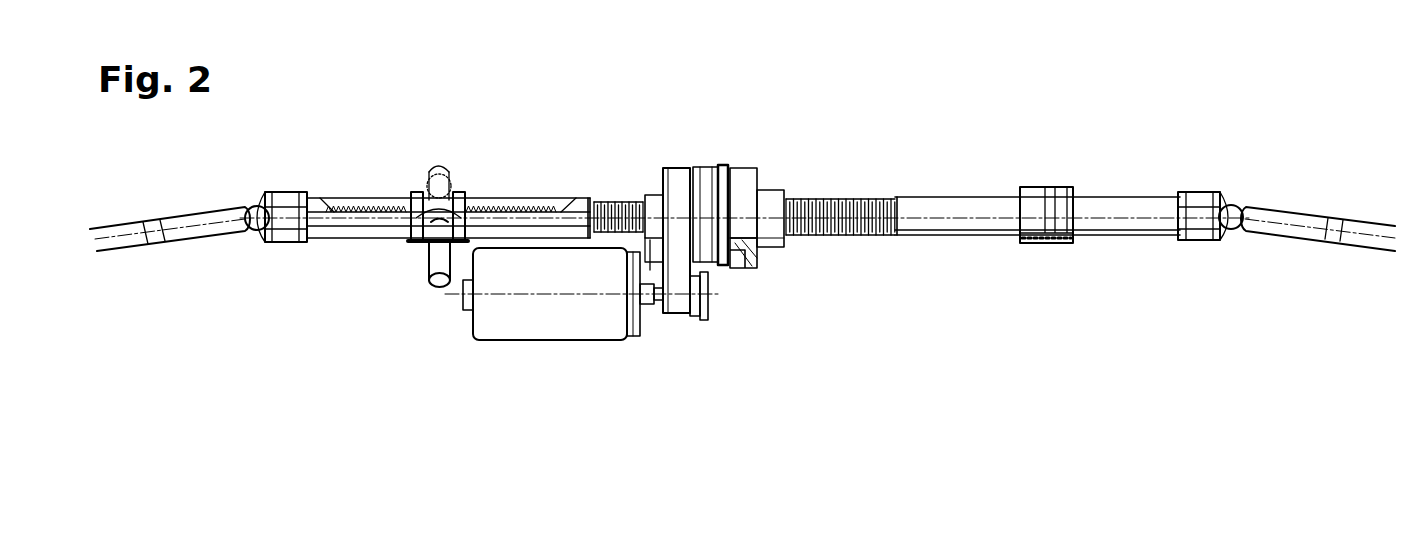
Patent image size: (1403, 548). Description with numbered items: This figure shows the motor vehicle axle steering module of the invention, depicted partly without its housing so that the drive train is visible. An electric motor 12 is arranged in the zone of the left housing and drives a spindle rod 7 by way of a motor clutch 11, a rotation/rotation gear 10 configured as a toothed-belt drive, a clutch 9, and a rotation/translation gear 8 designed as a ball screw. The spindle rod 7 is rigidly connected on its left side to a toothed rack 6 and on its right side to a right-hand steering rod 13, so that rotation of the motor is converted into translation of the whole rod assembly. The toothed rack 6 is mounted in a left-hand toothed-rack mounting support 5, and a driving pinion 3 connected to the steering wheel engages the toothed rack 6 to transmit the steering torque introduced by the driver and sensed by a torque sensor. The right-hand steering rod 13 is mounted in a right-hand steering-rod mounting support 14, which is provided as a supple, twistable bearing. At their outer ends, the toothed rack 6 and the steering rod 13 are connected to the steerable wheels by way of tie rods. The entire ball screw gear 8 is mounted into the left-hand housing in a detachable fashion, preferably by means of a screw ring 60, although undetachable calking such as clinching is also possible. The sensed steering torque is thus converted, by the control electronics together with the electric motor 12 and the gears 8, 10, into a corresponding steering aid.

The driving pinion 3 is at (452, 176).
The left-hand toothed-rack mounting support 5 is at (420, 246).
The toothed rack 6 is at (323, 207).
The spindle rod 7 is at (813, 206).
The rotation/translation gear 8 is at (756, 268).
The clutch 9 is at (714, 176).
The rotation/rotation gear 10 is at (680, 176).
The motor clutch 11 is at (648, 304).
The electric motor 12 is at (497, 327).
The right-hand steering rod 13 is at (940, 206).
The right-hand steering-rod mounting support 14 is at (1040, 206).
The screw ring 60 is at (736, 270).